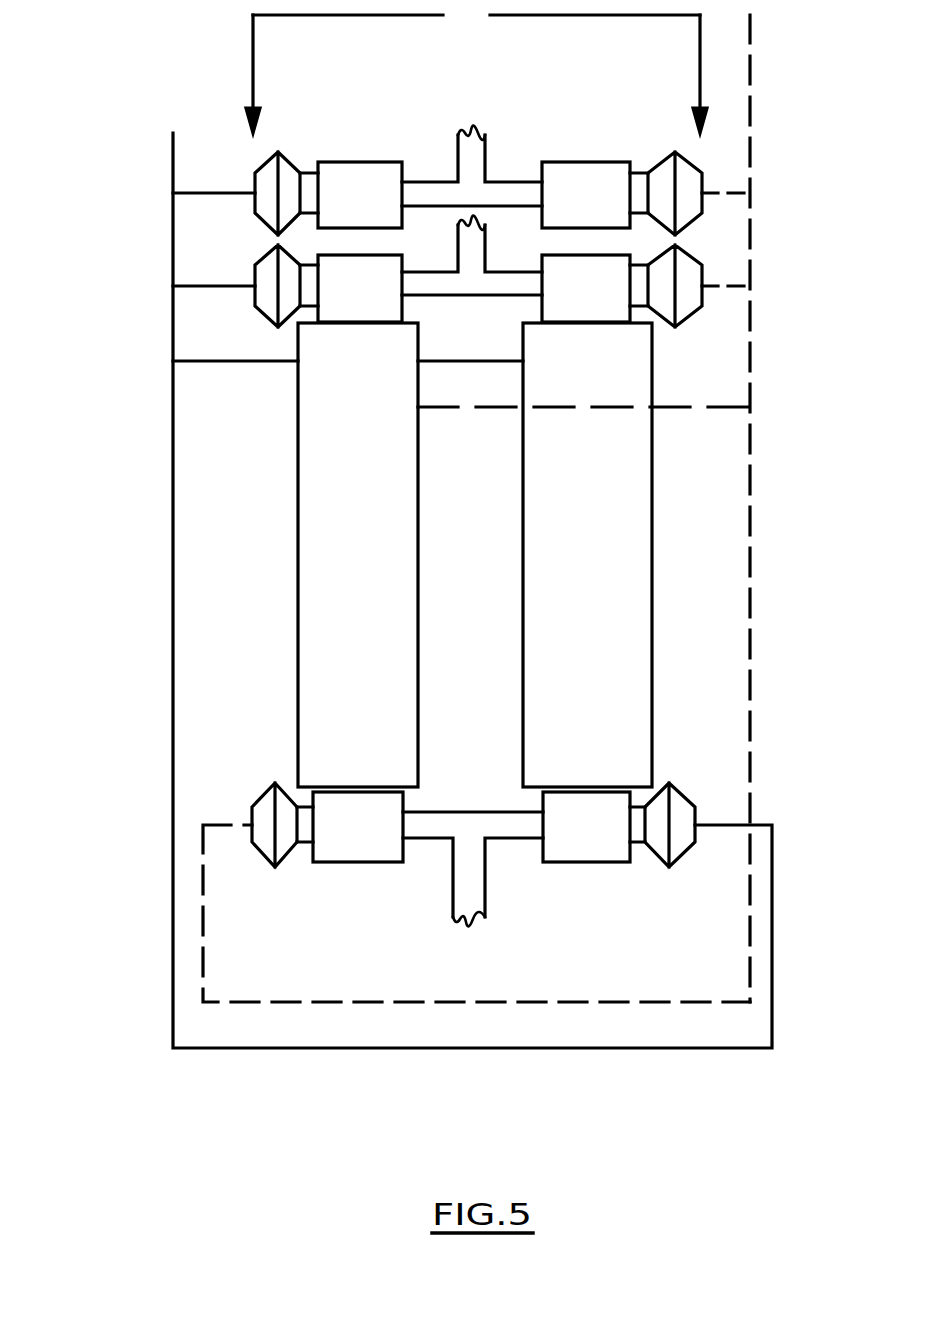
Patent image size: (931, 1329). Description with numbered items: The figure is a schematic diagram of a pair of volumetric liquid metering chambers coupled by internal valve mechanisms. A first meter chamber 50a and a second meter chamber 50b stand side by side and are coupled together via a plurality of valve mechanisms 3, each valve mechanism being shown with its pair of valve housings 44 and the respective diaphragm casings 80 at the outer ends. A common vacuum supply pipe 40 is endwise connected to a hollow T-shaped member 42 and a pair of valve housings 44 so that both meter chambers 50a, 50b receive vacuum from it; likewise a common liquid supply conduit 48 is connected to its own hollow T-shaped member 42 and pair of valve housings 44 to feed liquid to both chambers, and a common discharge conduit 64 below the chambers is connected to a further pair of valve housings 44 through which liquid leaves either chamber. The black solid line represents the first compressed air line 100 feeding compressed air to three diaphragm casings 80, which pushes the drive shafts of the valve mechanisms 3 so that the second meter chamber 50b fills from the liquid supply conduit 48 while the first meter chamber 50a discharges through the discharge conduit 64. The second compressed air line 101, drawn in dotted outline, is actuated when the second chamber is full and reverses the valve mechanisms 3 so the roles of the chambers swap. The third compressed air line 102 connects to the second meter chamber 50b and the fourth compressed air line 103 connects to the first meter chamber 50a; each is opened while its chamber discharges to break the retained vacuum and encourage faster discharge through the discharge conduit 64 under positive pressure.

The valve mechanism 3 is at (476, 68).
The vacuum supply pipe 40 is at (455, 155).
The hollow T-shaped member 42 is at (497, 297).
The valve housing 44 is at (578, 170).
The liquid supply conduit 48 is at (478, 252).
The first meter chamber 50a is at (388, 634).
The second meter chamber 50b is at (620, 634).
The discharge conduit 64 is at (483, 887).
The diaphragm casing 80 is at (660, 163).
The first compressed air line 100 is at (172, 160).
The second compressed air line 101 is at (752, 145).
The third compressed air line 102 is at (247, 363).
The fourth compressed air line 103 is at (697, 410).